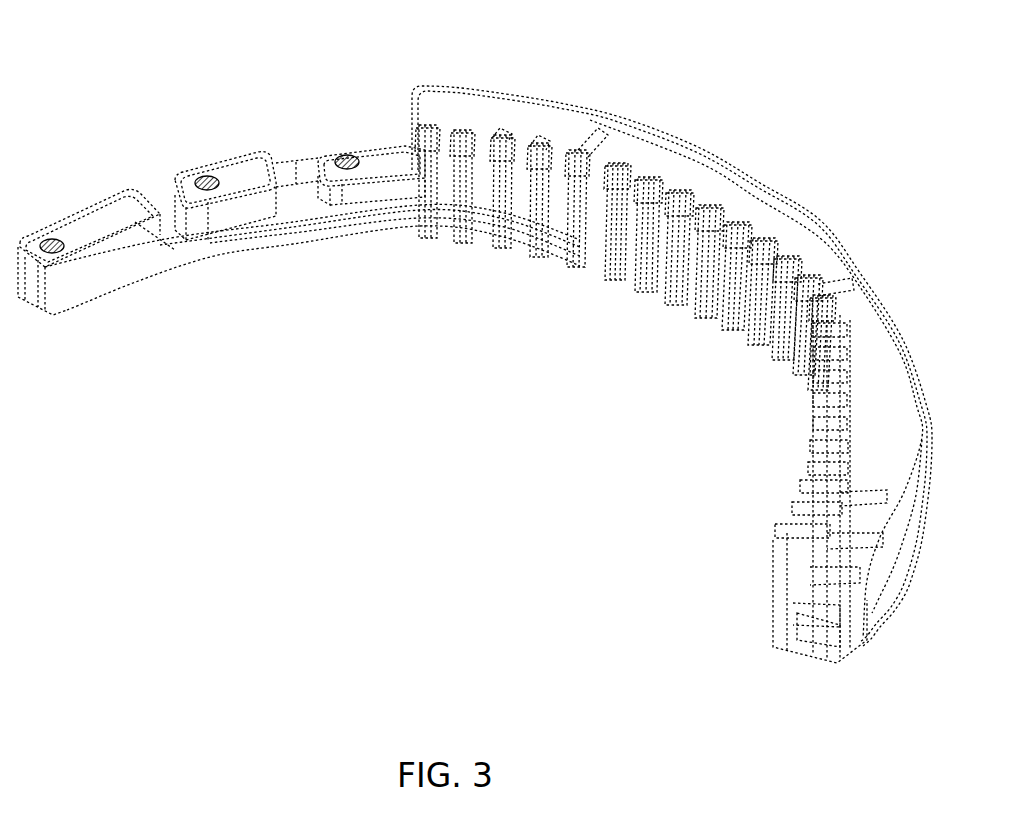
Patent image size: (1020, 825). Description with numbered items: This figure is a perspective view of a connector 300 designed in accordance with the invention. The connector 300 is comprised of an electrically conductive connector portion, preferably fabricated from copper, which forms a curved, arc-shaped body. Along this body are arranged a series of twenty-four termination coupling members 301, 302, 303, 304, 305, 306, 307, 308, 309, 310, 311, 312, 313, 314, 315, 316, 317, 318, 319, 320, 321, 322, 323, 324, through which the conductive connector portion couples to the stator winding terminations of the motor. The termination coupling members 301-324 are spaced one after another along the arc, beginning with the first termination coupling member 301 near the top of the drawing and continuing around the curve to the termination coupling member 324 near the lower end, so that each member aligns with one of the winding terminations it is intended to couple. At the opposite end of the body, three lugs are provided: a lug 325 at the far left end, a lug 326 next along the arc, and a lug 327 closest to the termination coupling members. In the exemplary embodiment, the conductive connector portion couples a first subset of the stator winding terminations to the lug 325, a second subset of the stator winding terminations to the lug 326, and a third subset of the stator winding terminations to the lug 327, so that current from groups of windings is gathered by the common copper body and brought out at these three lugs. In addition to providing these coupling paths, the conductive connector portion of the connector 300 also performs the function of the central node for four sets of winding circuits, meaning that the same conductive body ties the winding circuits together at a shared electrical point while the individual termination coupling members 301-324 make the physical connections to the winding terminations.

The connector 300 is at (414, 461).
The termination coupling member 301 is at (427, 125).
The termination coupling member 302 is at (463, 130).
The termination coupling member 303 is at (502, 135).
The termination coupling member 304 is at (539, 143).
The termination coupling member 305 is at (578, 150).
The termination coupling member 306 is at (582, 195).
The termination coupling member 307 is at (646, 186).
The termination coupling member 308 is at (657, 225).
The termination coupling member 309 is at (702, 216).
The termination coupling member 310 is at (715, 224).
The termination coupling member 311 is at (755, 255).
The termination coupling member 312 is at (772, 258).
The termination coupling member 313 is at (796, 288).
The termination coupling member 314 is at (798, 300).
The termination coupling member 315 is at (822, 322).
The termination coupling member 316 is at (822, 347).
The termination coupling member 317 is at (835, 370).
The termination coupling member 318 is at (822, 393).
The termination coupling member 319 is at (840, 418).
The termination coupling member 320 is at (815, 440).
The termination coupling member 321 is at (815, 460).
The termination coupling member 322 is at (810, 482).
The termination coupling member 323 is at (800, 507).
The termination coupling member 324 is at (778, 530).
The lug 325 is at (50, 238).
The lug 326 is at (207, 176).
The lug 327 is at (347, 155).